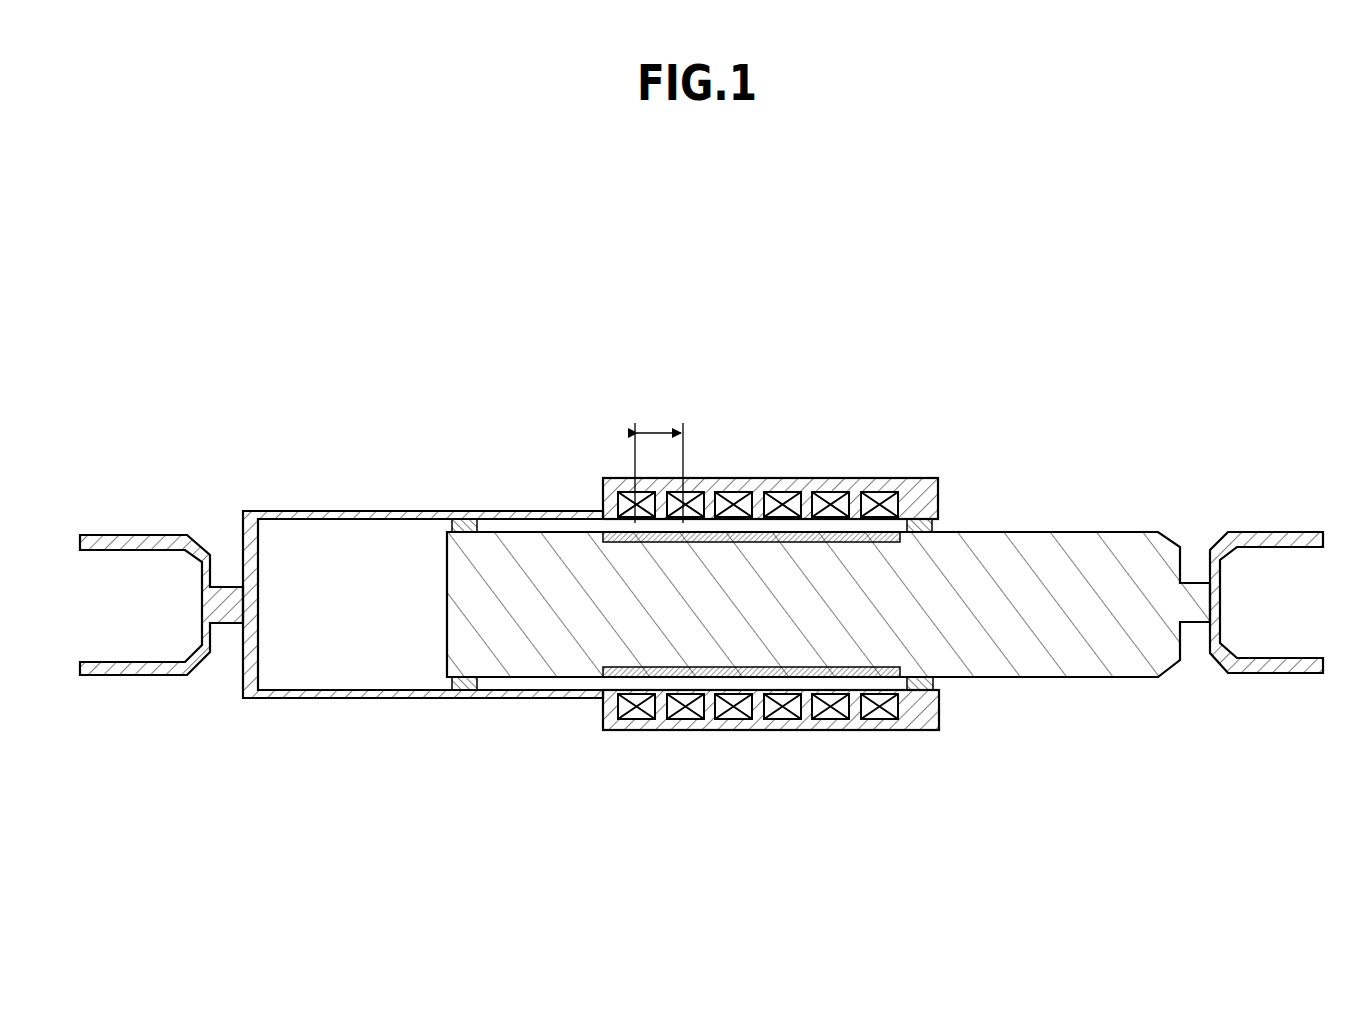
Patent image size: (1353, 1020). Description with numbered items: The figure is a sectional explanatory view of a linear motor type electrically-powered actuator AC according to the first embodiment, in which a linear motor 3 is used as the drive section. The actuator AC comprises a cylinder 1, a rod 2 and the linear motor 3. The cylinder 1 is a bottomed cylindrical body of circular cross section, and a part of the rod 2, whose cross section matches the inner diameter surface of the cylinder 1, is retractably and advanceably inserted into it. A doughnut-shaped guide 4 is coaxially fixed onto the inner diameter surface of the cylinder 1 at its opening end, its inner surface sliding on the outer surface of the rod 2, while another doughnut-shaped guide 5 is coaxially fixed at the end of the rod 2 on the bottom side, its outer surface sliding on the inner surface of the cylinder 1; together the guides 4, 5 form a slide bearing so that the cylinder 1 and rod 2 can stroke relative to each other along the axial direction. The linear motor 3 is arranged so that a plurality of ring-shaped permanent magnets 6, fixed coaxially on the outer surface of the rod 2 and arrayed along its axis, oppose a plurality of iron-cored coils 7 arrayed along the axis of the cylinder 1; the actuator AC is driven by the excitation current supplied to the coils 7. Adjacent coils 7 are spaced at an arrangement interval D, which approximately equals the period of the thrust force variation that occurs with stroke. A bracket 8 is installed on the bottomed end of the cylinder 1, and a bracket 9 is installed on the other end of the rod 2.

The cylinder 1 is at (333, 510).
The rod 2 is at (1110, 533).
The linear motor 3 is at (819, 466).
The guide 4 is at (937, 684).
The guide 5 is at (463, 521).
The permanent magnets 6 is at (605, 666).
The coils 7 is at (632, 722).
The bracket 8 is at (152, 533).
The bracket 9 is at (1288, 540).
The arrangement interval D is at (659, 464).
The electrically-powered actuator AC is at (959, 440).